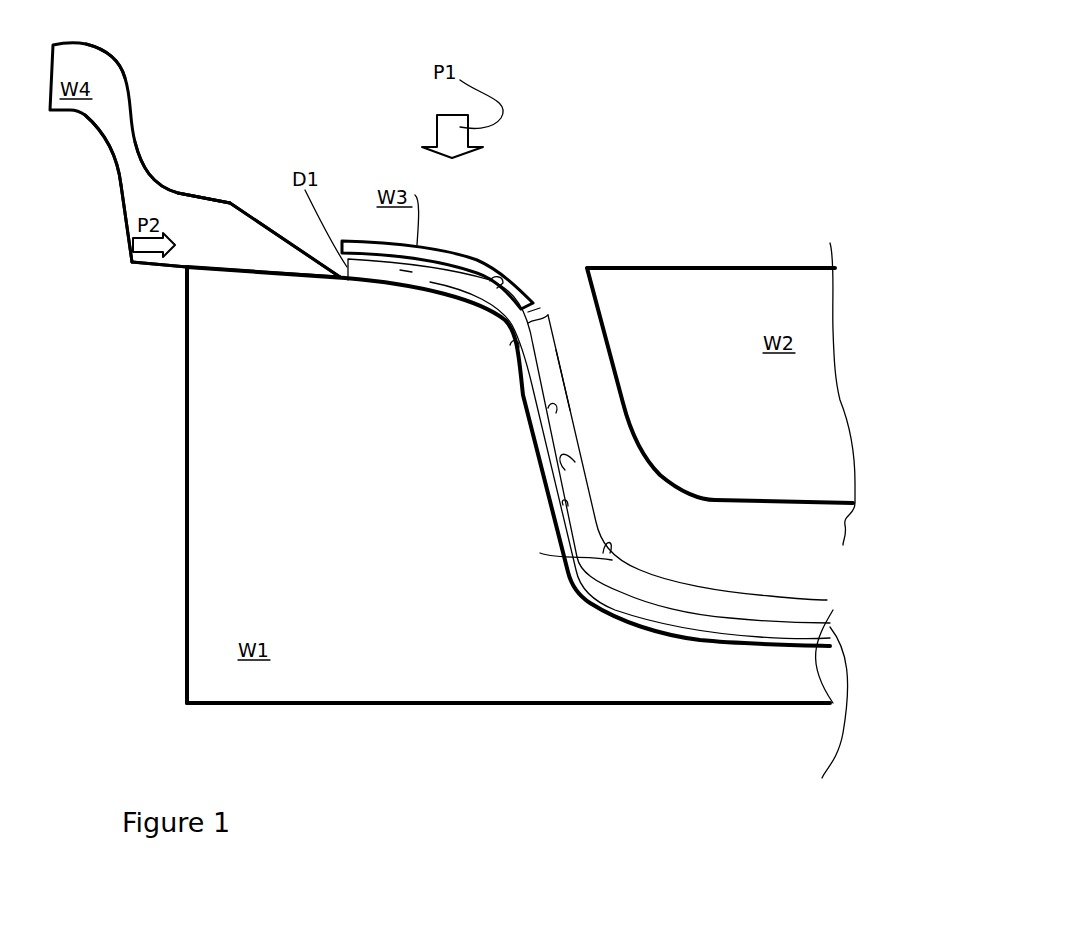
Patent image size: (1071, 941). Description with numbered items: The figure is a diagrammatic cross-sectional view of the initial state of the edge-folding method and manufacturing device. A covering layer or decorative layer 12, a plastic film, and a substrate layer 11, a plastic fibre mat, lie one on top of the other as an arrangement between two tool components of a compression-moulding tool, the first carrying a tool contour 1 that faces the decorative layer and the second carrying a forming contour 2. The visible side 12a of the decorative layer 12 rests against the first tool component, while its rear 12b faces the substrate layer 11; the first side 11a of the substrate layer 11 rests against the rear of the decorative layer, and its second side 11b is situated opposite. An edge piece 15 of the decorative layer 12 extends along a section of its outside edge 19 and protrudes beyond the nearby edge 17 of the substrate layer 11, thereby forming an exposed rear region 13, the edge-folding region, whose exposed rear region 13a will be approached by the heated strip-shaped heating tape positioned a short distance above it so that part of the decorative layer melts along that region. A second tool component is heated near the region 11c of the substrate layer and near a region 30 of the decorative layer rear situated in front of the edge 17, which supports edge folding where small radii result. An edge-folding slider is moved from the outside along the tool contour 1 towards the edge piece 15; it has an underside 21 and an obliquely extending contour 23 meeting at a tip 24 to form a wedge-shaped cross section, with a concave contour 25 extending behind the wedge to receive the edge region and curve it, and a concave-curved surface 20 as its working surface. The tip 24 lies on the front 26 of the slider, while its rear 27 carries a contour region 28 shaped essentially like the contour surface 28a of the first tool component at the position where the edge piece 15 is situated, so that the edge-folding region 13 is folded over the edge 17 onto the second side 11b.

The tool contour 1 is at (713, 497).
The forming contour 2 is at (637, 627).
The substrate layer 11 is at (820, 600).
The first side of the substrate layer 11a is at (566, 505).
The second side of the substrate layer 11b is at (563, 560).
The region of the substrate layer 11c is at (572, 398).
The covering layer or decorative layer 12 is at (639, 542).
The visible side of the decorative layer 12a is at (575, 462).
The rear of the decorative layer 12b is at (550, 410).
The exposed rear region / edge-folding region 13 is at (388, 253).
The exposed rear region of the edge region 13a is at (497, 280).
The edge piece 15 is at (405, 272).
The edge of the substrate layer 17 is at (548, 313).
The outside edge of the decorative layer 19 is at (340, 273).
The concave-curved surface 20 is at (138, 142).
The underside of the slider 21 is at (163, 270).
The obliquely extending contour 23 is at (230, 203).
The tip 24 is at (333, 280).
The concave contour 25 is at (200, 148).
The front of the slider 26 is at (291, 88).
The rear of the slider 27 is at (86, 183).
The contour region 28 is at (118, 193).
The contour surface of the first tool component 28a is at (517, 348).
The region of the rear of the decorative layer 30 is at (537, 308).